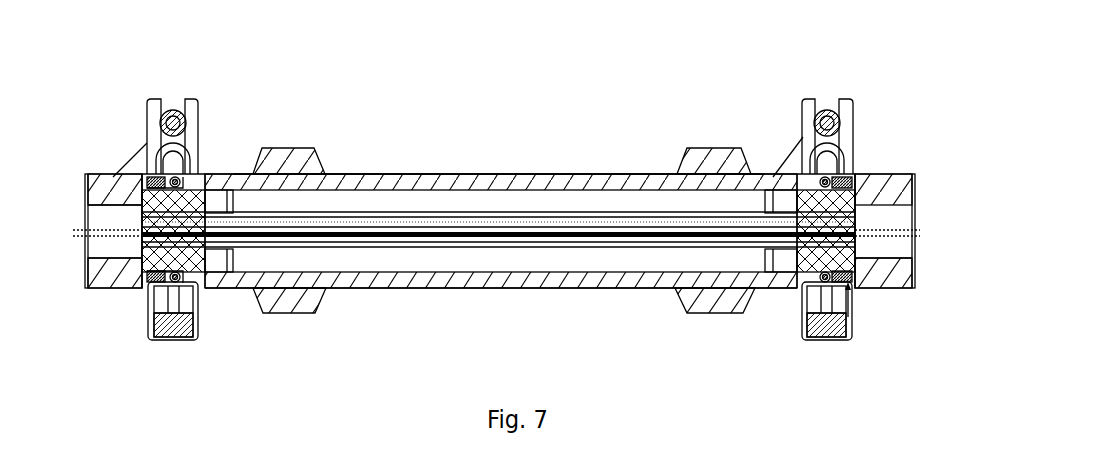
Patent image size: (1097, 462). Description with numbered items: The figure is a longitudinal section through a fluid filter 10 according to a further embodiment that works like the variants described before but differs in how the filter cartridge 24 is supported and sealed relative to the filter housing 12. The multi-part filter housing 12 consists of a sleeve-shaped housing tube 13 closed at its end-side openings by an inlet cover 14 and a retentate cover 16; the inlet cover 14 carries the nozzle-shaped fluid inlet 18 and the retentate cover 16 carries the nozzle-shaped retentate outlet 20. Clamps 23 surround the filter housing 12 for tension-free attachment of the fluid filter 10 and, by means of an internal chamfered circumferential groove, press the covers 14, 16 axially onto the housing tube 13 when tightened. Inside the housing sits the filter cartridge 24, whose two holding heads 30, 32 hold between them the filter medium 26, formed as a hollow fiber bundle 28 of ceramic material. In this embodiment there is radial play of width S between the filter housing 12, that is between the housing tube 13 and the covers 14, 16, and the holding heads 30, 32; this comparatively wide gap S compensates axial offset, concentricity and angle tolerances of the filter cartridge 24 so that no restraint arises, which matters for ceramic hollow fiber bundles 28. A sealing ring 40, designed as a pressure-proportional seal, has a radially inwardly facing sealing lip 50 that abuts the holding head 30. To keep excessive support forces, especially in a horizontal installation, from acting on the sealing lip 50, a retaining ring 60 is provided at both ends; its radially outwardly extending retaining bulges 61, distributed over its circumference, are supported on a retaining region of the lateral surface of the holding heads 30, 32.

The fluid filter 10 is at (597, 88).
The filter housing 12 is at (537, 157).
The housing tube 13 is at (421, 178).
The inlet cover 14 is at (90, 176).
The retentate cover 16 is at (890, 278).
The fluid inlet 18 is at (102, 224).
The retentate outlet 20 is at (900, 218).
The clamp 23 is at (199, 112).
The filter cartridge 24 is at (343, 208).
The filter medium 26 is at (628, 243).
The hollow fiber bundle 28 is at (656, 223).
The holding head 30 is at (197, 196).
The holding head 32 is at (860, 196).
The sealing ring 40 is at (165, 305).
The sealing lip 50 is at (163, 270).
The retaining ring 60 is at (178, 270).
The retaining bulge 61 is at (172, 265).
The width of radial play S is at (853, 264).